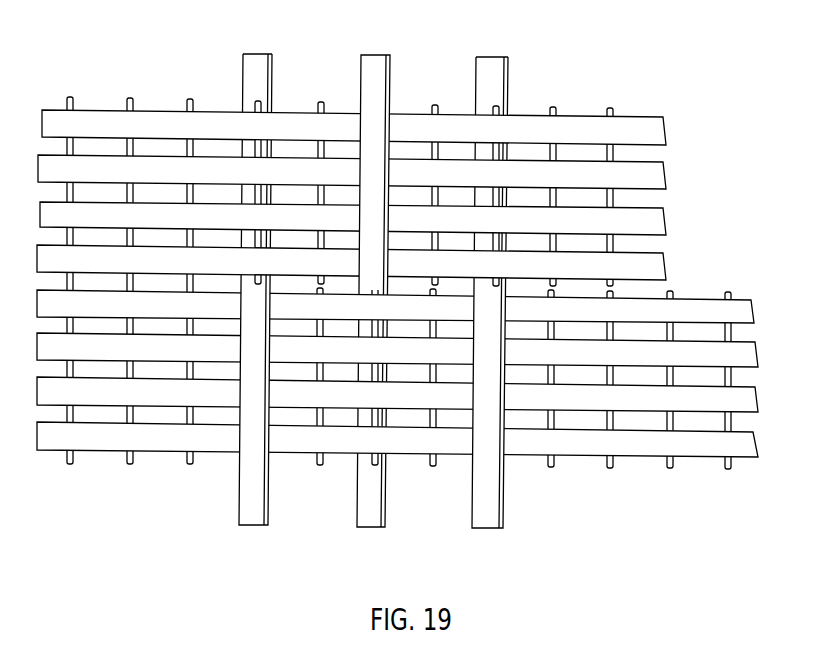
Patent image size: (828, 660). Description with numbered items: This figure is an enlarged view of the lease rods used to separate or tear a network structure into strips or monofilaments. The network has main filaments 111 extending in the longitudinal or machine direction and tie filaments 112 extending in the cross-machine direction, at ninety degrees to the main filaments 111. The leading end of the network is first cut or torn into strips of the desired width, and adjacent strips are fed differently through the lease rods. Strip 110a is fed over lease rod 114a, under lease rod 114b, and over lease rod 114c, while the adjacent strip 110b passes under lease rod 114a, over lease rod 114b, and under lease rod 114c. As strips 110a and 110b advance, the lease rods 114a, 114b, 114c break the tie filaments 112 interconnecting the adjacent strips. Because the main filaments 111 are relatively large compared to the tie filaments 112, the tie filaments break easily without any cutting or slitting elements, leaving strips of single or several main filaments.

The strip 110a is at (99, 101).
The strip 110b is at (110, 460).
The main filament 111 is at (152, 114).
The tie filament 112 is at (320, 100).
The lease rod 114a is at (246, 73).
The lease rod 114b is at (367, 75).
The lease rod 114c is at (482, 76).